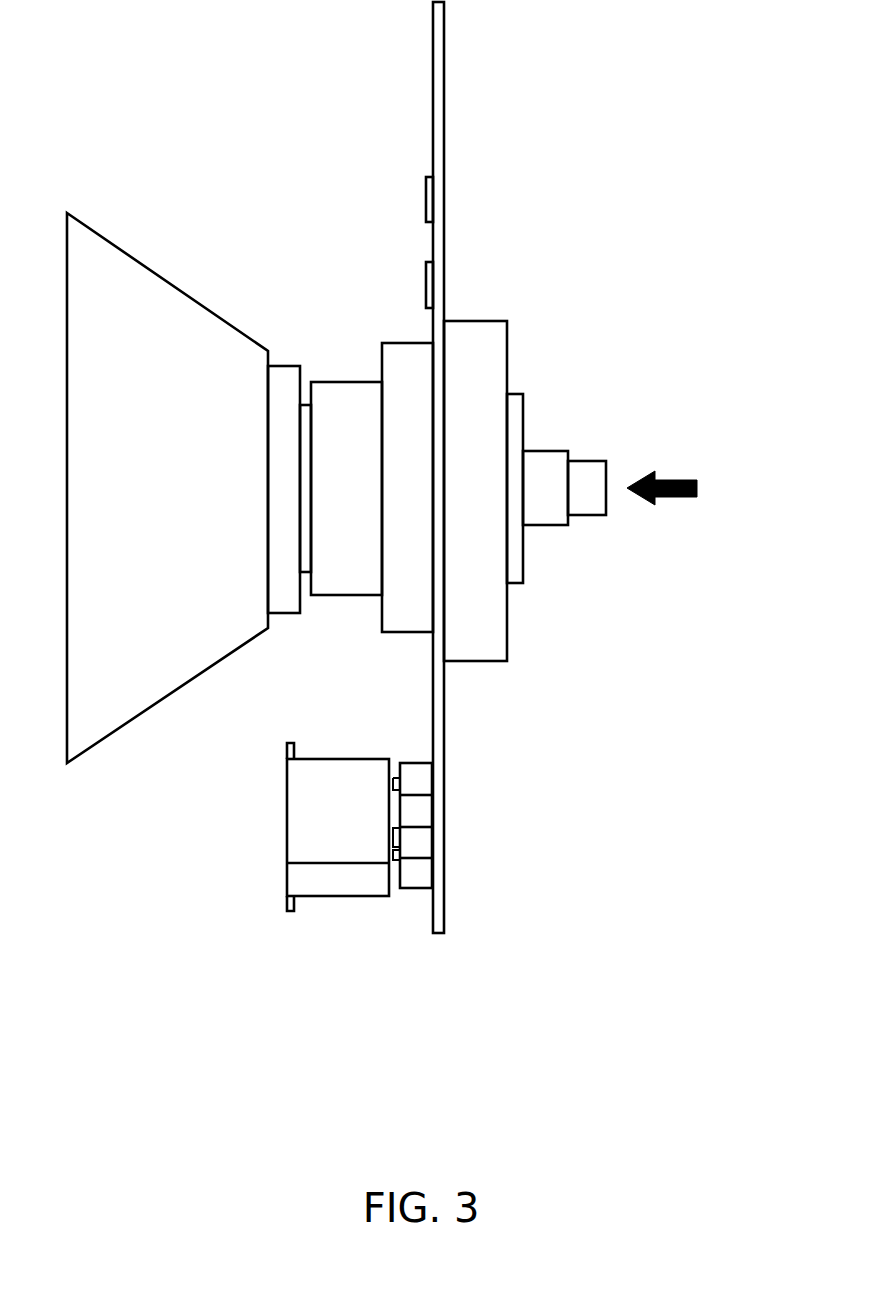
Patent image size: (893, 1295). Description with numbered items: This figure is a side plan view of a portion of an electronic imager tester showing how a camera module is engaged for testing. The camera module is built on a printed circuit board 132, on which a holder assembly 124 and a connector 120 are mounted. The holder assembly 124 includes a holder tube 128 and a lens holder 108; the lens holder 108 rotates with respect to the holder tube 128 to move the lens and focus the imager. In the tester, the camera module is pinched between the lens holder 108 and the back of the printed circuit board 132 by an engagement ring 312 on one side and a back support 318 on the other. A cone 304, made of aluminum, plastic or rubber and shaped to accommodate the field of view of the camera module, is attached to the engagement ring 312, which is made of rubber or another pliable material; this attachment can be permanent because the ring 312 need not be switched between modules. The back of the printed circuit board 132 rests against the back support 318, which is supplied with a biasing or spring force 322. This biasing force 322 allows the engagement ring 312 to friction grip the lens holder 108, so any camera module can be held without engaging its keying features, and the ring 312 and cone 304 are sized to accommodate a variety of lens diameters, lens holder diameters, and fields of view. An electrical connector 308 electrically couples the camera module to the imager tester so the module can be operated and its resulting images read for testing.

The cone 304 is at (121, 247).
The engagement ring 312 is at (288, 615).
The lens holder 108 is at (303, 458).
The holder tube 128 is at (331, 577).
The holder assembly 124 is at (392, 320).
The printed circuit board 132 is at (442, 88).
The back support 318 is at (480, 340).
The biasing force 322 is at (674, 480).
The electrical connector 308 is at (313, 827).
The connector 120 is at (420, 838).